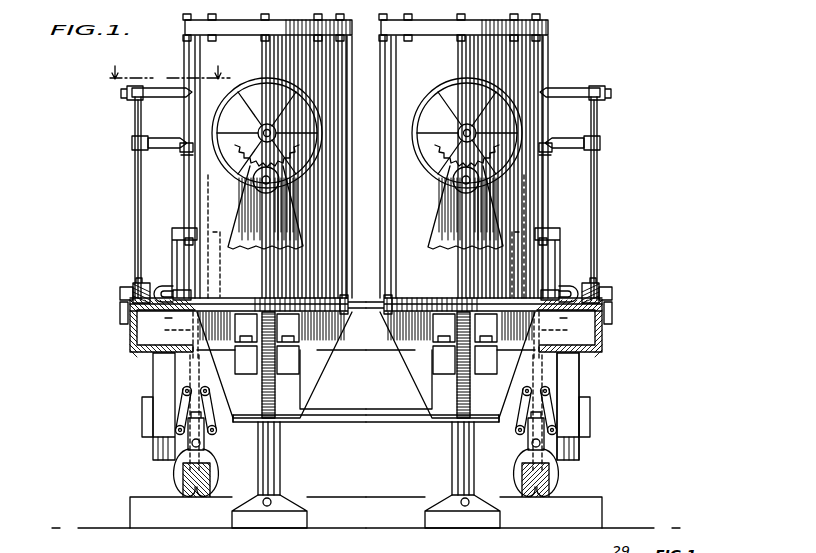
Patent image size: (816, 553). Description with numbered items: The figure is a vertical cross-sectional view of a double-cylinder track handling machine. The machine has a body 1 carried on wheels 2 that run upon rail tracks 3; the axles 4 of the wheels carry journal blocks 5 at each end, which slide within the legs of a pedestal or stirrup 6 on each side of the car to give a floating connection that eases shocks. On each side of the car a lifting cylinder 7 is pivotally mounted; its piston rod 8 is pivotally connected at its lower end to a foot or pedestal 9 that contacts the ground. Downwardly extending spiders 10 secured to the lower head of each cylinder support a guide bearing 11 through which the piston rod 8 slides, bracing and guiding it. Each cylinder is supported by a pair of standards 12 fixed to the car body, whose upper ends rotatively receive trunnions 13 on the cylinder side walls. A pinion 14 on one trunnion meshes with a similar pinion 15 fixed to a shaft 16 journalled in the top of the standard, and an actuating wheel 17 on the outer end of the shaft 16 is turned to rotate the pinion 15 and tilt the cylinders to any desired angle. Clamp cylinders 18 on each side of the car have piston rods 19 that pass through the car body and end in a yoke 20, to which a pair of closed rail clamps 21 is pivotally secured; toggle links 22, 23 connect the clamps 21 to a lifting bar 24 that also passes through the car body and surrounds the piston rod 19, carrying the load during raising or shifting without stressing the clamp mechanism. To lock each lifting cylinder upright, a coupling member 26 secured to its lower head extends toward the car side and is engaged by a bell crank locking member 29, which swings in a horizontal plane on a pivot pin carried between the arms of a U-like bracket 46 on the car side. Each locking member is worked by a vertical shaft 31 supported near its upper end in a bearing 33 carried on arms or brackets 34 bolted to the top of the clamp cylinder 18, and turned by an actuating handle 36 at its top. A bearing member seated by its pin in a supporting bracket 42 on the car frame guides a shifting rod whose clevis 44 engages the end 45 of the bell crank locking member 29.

The body 1 is at (598, 348).
The wheels 2 is at (604, 370).
The rail tracks 3 is at (210, 494).
The axles 4 is at (380, 428).
The journal blocks 5 is at (591, 417).
The pedestal or stirrup 6 is at (581, 392).
The cylinder 7 is at (325, 68).
The piston rod 8 is at (281, 456).
The foot or pedestal 9 is at (254, 523).
The spiders 10 is at (311, 378).
The guide bearing 11 is at (287, 423).
The standards 12 is at (240, 211).
The trunnions 13 is at (252, 181).
The pinion 14 is at (247, 161).
The pinion 15 is at (257, 130).
The shaft 16 is at (266, 126).
The actuating wheel 17 is at (256, 82).
The clamp cylinders 18 is at (183, 186).
The piston rod 19 is at (561, 421).
The yoke 20 is at (187, 438).
The rail clamps 21 is at (176, 478).
The toggle link 22 is at (172, 405).
The toggle link 23 is at (213, 397).
The lifting bar 24 is at (153, 360).
The coupling member 26 is at (371, 313).
The bell crank locking member 29 is at (173, 290).
The vertical shaft 31 is at (135, 206).
The bearing 33 is at (132, 148).
The arms or brackets 34 is at (171, 150).
The actuating handle 36 is at (169, 98).
The supporting bracket 42 is at (118, 316).
The clevis 44 is at (134, 281).
The end of bell crank locking member 45 is at (120, 293).
The U-like bracket 46 is at (157, 284).